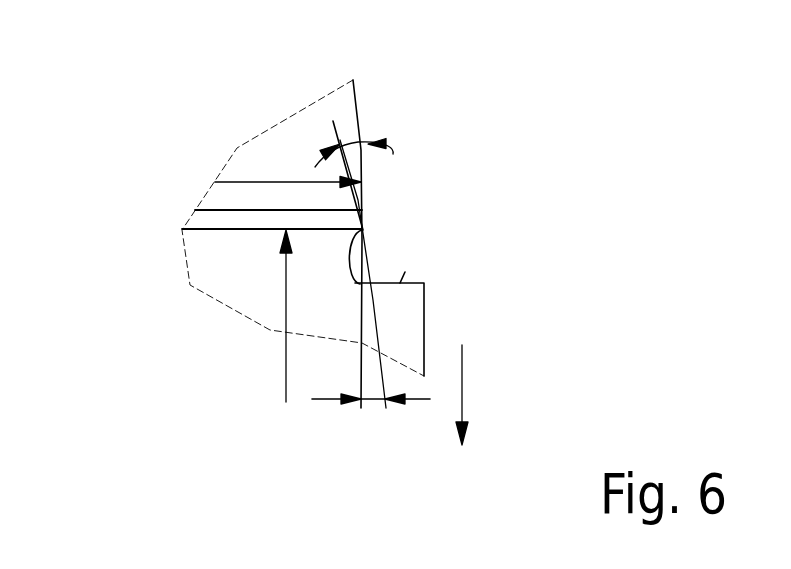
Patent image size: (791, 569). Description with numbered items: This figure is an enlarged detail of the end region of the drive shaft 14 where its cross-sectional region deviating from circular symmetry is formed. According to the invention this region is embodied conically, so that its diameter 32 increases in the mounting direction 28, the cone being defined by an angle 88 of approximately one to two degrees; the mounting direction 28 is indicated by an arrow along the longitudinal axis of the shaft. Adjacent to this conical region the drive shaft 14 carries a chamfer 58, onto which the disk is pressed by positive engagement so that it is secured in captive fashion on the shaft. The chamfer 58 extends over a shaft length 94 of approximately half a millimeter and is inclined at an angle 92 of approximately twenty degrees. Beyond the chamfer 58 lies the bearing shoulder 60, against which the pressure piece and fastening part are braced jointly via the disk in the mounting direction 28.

The drive shaft 14 is at (365, 118).
The mounting direction 28 is at (462, 387).
The diameter 32 is at (206, 181).
The chamfer 58 is at (365, 226).
The bearing shoulder 60 is at (405, 272).
The angle 88 is at (373, 400).
The angle 92 is at (333, 121).
The shaft length 94 is at (286, 369).